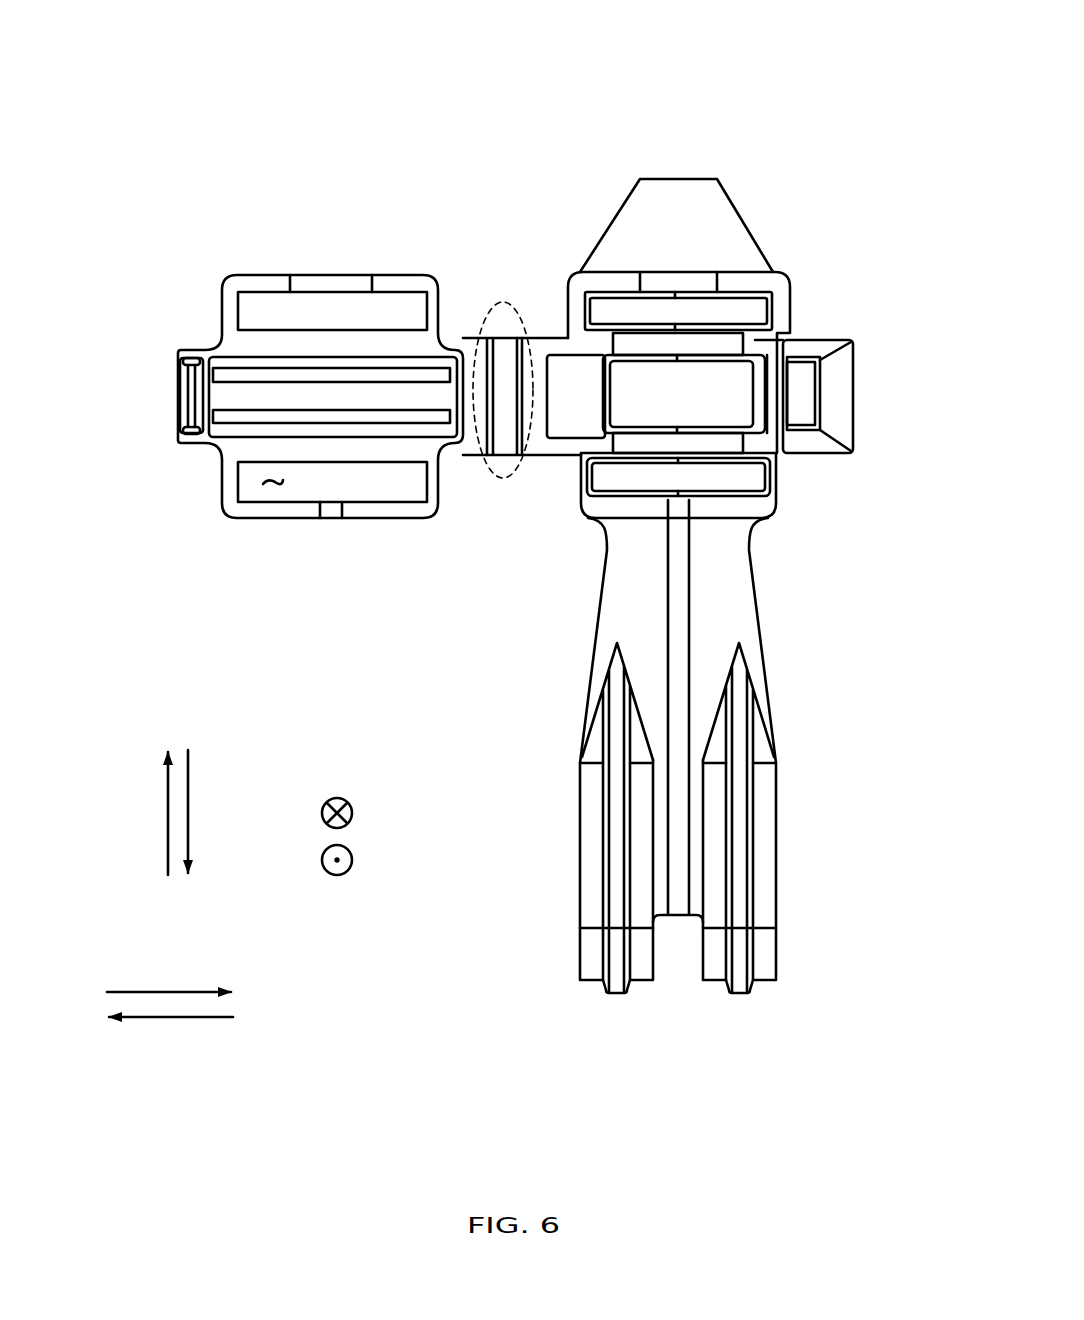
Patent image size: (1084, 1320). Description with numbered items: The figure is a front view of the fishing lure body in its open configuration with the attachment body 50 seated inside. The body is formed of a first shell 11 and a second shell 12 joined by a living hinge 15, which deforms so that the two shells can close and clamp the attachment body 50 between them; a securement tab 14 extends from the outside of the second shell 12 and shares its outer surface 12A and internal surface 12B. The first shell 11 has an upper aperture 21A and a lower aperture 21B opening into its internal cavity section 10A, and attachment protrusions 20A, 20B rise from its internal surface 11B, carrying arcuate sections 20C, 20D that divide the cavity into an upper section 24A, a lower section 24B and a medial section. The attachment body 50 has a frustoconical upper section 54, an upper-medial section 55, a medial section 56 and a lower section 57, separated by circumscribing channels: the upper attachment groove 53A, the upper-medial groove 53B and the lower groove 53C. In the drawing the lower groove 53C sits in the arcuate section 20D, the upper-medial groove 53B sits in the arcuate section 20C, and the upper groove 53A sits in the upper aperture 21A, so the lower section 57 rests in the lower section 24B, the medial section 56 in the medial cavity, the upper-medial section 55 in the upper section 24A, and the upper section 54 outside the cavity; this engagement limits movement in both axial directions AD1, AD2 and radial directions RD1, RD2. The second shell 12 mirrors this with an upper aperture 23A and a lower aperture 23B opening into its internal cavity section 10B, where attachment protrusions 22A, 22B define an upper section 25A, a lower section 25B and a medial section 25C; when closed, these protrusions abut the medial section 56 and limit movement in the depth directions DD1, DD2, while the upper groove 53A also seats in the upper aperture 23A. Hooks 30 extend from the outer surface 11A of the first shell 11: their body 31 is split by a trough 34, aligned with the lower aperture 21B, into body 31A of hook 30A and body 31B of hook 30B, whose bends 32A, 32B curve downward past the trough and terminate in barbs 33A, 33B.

The internal cavity section 10A is at (787, 283).
The internal cavity section 10B is at (270, 289).
The first shell 11 is at (843, 323).
The outer surface 11A is at (787, 328).
The internal surface 11B is at (772, 498).
The second shell 12 is at (361, 121).
The outer surface 12A is at (253, 520).
The internal surface 12B is at (272, 490).
The securement tab 14 is at (148, 392).
The hinge 15 is at (485, 467).
The attachment protrusion 20A is at (593, 337).
The attachment protrusion 20B is at (580, 437).
The arcuate section 20C is at (765, 322).
The arcuate section 20D is at (607, 445).
The upper aperture 21A is at (638, 285).
The lower aperture 21B is at (690, 520).
The attachment protrusion 22A is at (365, 415).
The attachment protrusion 22B is at (318, 368).
The upper aperture 23A is at (308, 273).
The lower aperture 23B is at (295, 478).
The upper section 24A is at (772, 337).
The lower section 24B is at (585, 498).
The upper section 25A is at (238, 315).
The lower section 25B is at (333, 500).
The medial section 25C is at (275, 392).
The hooks 30 is at (688, 1090).
The hook 30A is at (790, 858).
The hook 30B is at (553, 857).
The body 31 is at (780, 607).
The body 31A is at (737, 574).
The body 31B is at (598, 612).
The bend 32A is at (765, 978).
The bend 32B is at (591, 978).
The barb 33A is at (749, 638).
The barb 33B is at (607, 638).
The trough 34 is at (678, 897).
The attachment body 50 is at (697, 89).
The upper attachment groove 53A is at (676, 283).
The upper-medial groove 53B is at (727, 342).
The lower groove 53C is at (787, 455).
The upper section 54 is at (677, 197).
The upper-medial section 55 is at (698, 307).
The medial section 56 is at (728, 400).
The lower section 57 is at (598, 478).
The axial direction AD1 is at (165, 793).
The axial direction AD2 is at (190, 828).
The depth direction DD1 is at (322, 858).
The depth direction DD2 is at (352, 812).
The radial direction RD1 is at (172, 988).
The radial direction RD2 is at (168, 1023).